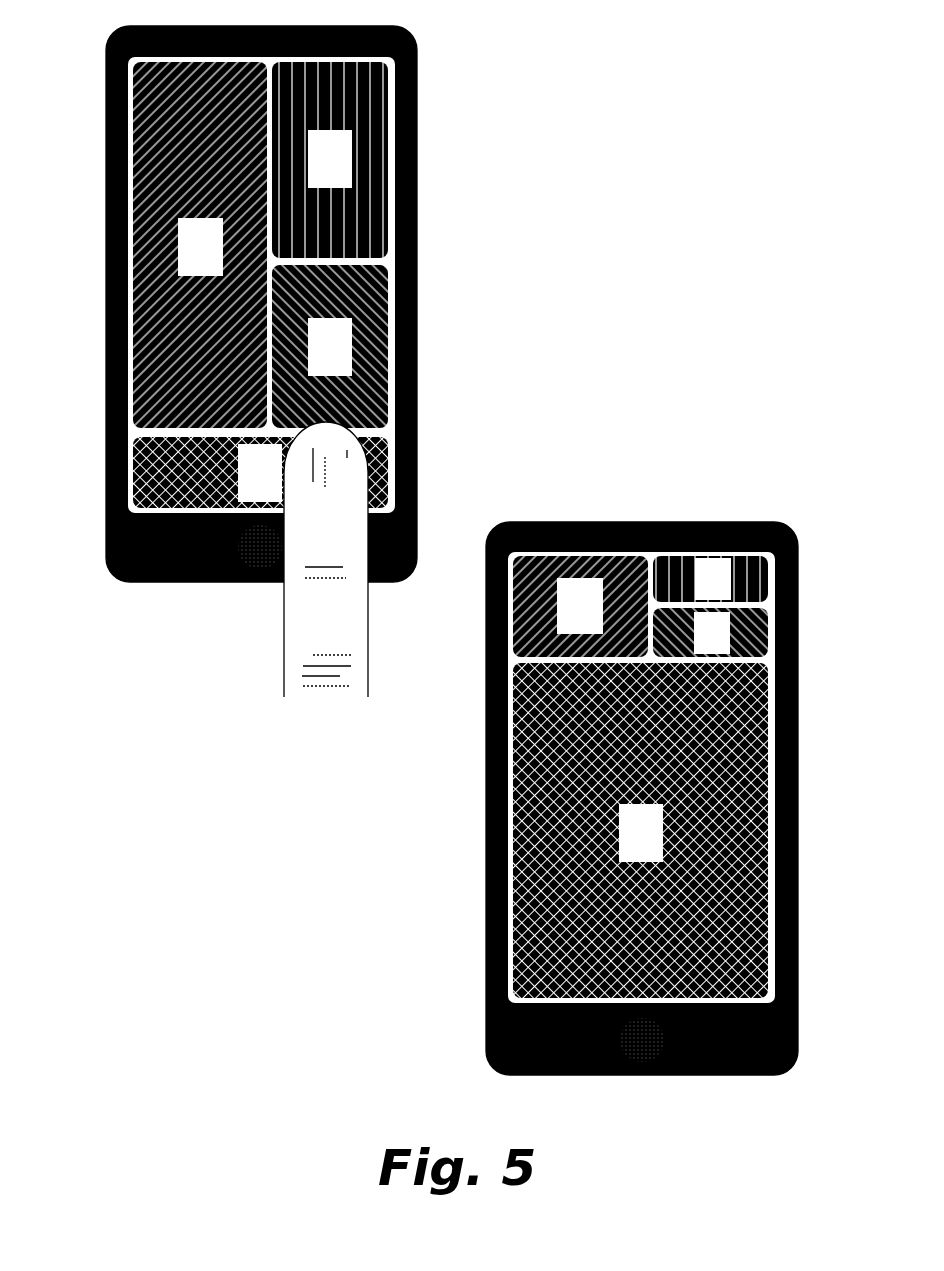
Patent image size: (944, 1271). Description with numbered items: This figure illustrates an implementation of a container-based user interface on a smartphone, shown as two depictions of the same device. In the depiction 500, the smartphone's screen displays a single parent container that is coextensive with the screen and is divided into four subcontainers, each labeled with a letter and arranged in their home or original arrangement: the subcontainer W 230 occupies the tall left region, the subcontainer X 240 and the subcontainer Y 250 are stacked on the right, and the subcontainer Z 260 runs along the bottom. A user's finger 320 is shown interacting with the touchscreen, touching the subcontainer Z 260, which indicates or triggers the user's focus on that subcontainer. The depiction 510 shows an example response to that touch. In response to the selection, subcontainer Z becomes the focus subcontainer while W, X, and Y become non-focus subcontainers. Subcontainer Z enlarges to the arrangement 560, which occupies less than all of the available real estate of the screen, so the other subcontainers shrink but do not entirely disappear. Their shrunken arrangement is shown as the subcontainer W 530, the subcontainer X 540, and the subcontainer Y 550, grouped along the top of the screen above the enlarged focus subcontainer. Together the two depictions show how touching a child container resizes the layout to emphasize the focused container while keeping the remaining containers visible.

The subcontainer W 230 is at (200, 245).
The subcontainer X 240 is at (330, 160).
The subcontainer Y 250 is at (330, 346).
The subcontainer Z 260 is at (260, 472).
The user's finger 320 is at (326, 559).
The depiction 500 is at (482, 57).
The depiction 510 is at (408, 997).
The subcontainer W 530 is at (580, 606).
The subcontainer X 540 is at (712, 581).
The subcontainer Y 550 is at (713, 634).
The arrangement of subcontainer Z 560 is at (640, 830).